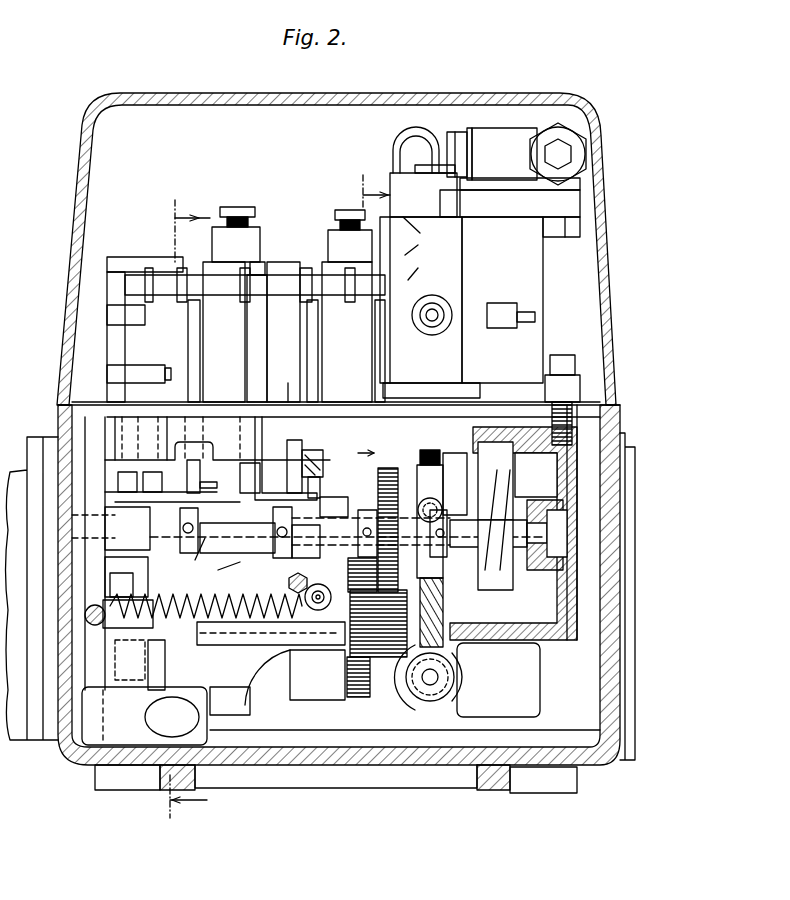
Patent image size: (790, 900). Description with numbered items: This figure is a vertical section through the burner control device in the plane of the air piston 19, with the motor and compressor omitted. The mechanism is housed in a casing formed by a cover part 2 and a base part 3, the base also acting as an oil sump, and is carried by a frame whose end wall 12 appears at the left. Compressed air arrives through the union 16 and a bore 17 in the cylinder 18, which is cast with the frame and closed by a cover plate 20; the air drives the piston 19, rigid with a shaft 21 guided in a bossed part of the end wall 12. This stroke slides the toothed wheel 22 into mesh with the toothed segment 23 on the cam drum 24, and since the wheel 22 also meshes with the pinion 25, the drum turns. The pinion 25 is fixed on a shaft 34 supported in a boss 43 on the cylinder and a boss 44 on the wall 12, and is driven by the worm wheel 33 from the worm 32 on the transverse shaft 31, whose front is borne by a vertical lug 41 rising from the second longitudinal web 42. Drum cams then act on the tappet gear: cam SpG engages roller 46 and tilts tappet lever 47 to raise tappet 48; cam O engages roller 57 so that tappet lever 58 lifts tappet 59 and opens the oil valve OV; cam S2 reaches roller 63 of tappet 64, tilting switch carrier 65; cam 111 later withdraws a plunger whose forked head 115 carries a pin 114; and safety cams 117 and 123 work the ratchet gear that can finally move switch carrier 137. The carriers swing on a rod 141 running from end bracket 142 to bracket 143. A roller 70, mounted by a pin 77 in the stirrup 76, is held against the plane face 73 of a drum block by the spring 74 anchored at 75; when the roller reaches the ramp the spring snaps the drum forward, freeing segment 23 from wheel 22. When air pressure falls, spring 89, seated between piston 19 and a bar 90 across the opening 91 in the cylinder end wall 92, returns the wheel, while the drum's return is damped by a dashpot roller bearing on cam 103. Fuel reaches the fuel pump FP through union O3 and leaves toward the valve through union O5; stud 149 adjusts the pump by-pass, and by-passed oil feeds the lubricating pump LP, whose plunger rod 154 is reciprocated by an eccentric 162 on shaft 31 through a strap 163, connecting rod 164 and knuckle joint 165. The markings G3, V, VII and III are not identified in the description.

The cover part 2 is at (433, 104).
The base part 3 is at (598, 770).
The end wall 12 is at (95, 478).
The union 16 is at (565, 385).
The bore 17 is at (560, 432).
The cylinder 18 is at (524, 438).
The piston 19 is at (534, 473).
The cover plate 20 is at (572, 485).
The shaft 21 is at (347, 535).
The toothed wheel 22 is at (395, 485).
The toothed segment 23 is at (340, 738).
The cam drum 24 is at (166, 692).
The pinion 25 is at (352, 640).
The transverse shaft 31 is at (428, 680).
The worm 32 is at (460, 665).
The worm wheel 33 is at (430, 604).
The shaft 34 is at (470, 630).
The vertical lug 41 is at (455, 690).
The second longitudinal web 42 is at (362, 725).
The boss 43 is at (355, 690).
The boss 44 is at (110, 598).
The roller 46 is at (318, 472).
The tappet lever 47 is at (348, 455).
The tappet 48 is at (322, 385).
The roller 57 is at (195, 482).
The tappet lever 58 is at (200, 452).
The tappet 59 is at (200, 390).
The roller 63 is at (245, 495).
The tappet 64 is at (248, 382).
The switch carrier 65 is at (288, 262).
The roller 70 is at (316, 567).
The plane face 73 is at (292, 675).
The spring 74 is at (206, 594).
The anchorage 75 is at (105, 630).
The stirrup 76 is at (262, 512).
The pin 77 is at (300, 640).
The spring 89 is at (495, 516).
The bar 90 is at (458, 470).
The opening 91 is at (495, 533).
The end wall 92 is at (465, 625).
The cam 103 is at (160, 698).
The cam 111 is at (322, 497).
The pin 114 is at (272, 465).
The forked head 115 is at (250, 452).
The cam 117 is at (148, 490).
The cam 123 is at (120, 583).
The switch carrier 137 is at (130, 257).
The rod 141 is at (285, 332).
The end bracket 142 is at (110, 350).
The bracket 143 is at (373, 320).
The stud 149 is at (560, 152).
The plunger rod 154 is at (425, 432).
The eccentric 162 is at (432, 712).
The strap 163 is at (468, 680).
The connecting rod 164 is at (460, 565).
The knuckle joint 165 is at (445, 440).
The union O3 is at (400, 140).
The union O5 is at (240, 210).
The valve cap G3 is at (341, 217).
The oil valve OV is at (224, 332).
The lubricating pump LP is at (421, 300).
The fuel pump FP is at (481, 288).
The section V is at (374, 311).
The section VII is at (283, 466).
The section III is at (190, 508).
The cam O is at (207, 538).
The cam S2 is at (217, 569).
The cam SpG is at (271, 626).